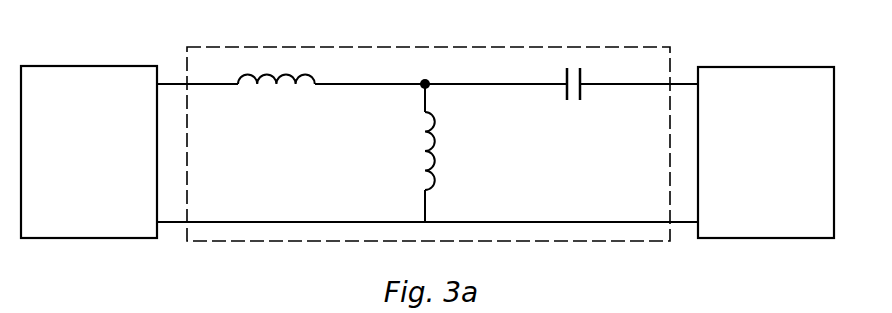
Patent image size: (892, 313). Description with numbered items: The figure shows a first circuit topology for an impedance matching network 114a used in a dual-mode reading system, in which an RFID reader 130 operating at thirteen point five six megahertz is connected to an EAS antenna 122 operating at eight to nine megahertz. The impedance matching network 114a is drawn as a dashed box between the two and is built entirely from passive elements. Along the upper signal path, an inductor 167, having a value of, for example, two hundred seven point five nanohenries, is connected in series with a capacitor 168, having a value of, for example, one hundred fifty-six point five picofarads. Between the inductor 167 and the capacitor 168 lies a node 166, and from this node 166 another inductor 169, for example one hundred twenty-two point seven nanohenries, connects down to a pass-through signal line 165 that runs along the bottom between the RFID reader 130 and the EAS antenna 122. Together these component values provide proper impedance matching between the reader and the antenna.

The RFID reader 130 is at (112, 66).
The EAS antenna 122 is at (713, 67).
The impedance matching network 114a is at (322, 47).
The inductor 167 is at (290, 76).
The node 166 is at (425, 79).
The capacitor 168 is at (585, 74).
The inductor 169 is at (426, 153).
The pass-through signal line 165 is at (270, 220).